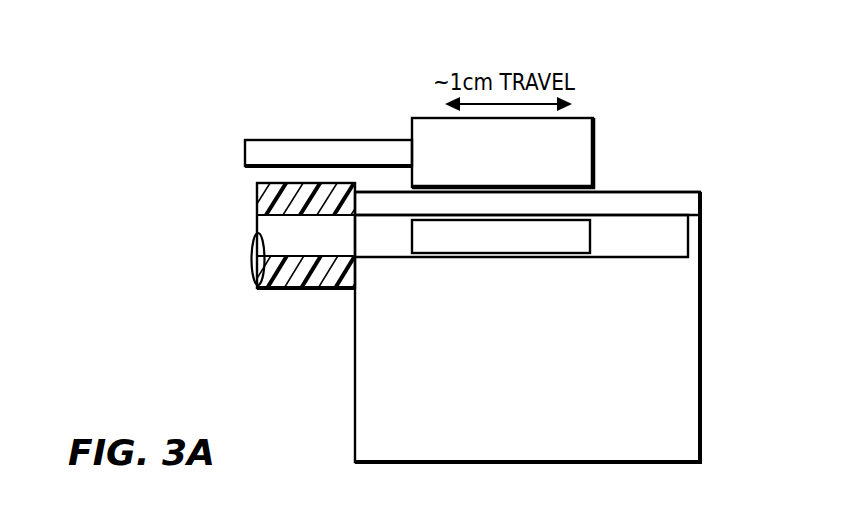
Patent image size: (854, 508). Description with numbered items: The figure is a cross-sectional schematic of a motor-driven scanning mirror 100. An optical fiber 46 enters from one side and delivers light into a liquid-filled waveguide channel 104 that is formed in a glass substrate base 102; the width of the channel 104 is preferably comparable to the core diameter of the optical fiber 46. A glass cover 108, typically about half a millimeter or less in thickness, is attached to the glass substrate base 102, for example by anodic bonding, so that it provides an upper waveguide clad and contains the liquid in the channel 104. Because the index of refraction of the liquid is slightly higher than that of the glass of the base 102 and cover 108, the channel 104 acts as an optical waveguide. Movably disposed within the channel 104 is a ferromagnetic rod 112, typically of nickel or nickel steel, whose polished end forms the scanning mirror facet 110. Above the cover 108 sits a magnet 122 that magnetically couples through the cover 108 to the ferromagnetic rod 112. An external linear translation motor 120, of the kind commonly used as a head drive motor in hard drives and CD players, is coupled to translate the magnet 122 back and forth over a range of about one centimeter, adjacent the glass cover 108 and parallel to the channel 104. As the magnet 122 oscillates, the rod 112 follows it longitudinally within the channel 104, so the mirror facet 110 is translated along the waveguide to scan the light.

The optical fiber 46 is at (258, 228).
The motor-driven scanning mirror 100 is at (342, 354).
The glass substrate base 102 is at (533, 431).
The liquid-filled waveguide channel 104 is at (373, 246).
The glass cover 108 is at (673, 192).
The scanning mirror facet 110 is at (412, 228).
The ferromagnetic rod 112 is at (508, 253).
The linear translation motor 120 is at (236, 150).
The magnet 122 is at (585, 118).